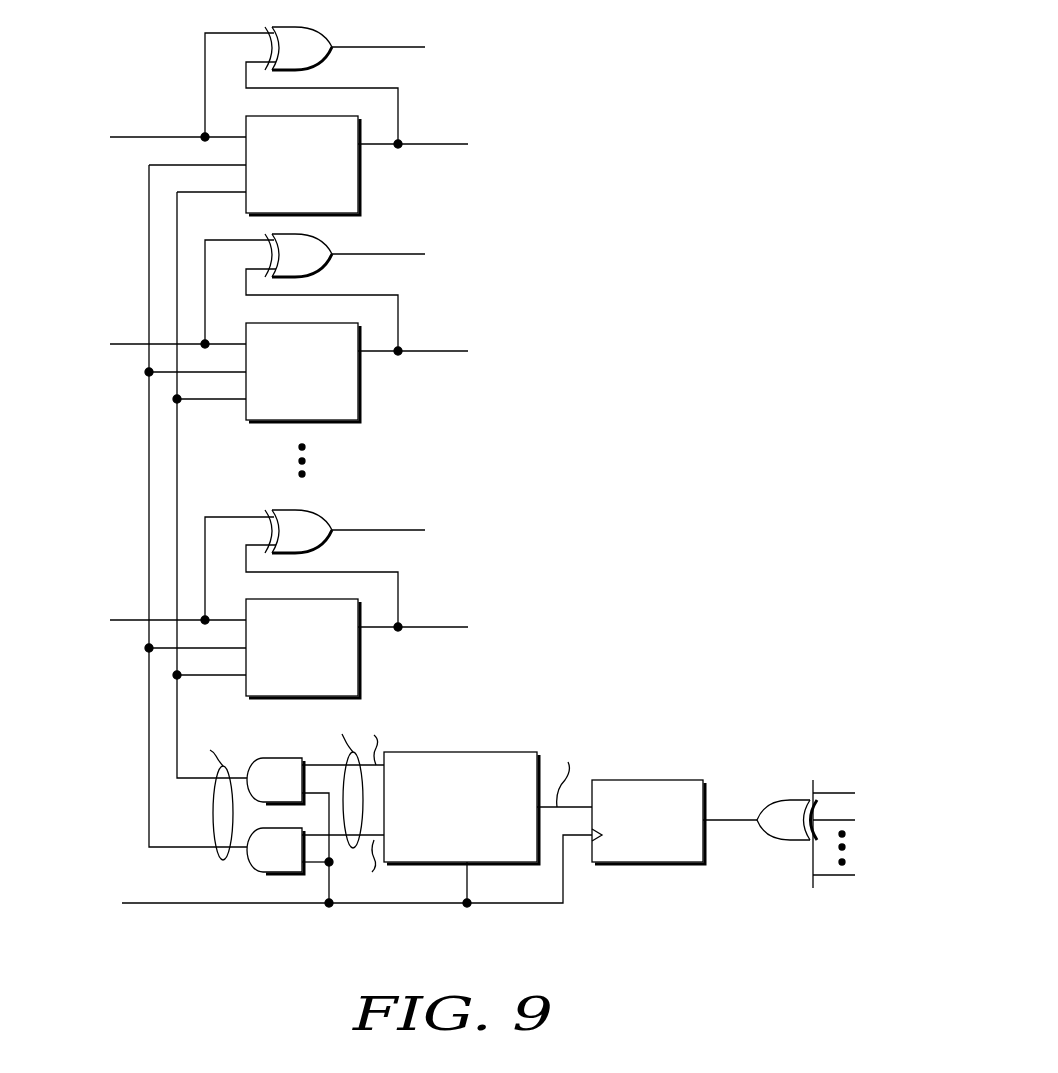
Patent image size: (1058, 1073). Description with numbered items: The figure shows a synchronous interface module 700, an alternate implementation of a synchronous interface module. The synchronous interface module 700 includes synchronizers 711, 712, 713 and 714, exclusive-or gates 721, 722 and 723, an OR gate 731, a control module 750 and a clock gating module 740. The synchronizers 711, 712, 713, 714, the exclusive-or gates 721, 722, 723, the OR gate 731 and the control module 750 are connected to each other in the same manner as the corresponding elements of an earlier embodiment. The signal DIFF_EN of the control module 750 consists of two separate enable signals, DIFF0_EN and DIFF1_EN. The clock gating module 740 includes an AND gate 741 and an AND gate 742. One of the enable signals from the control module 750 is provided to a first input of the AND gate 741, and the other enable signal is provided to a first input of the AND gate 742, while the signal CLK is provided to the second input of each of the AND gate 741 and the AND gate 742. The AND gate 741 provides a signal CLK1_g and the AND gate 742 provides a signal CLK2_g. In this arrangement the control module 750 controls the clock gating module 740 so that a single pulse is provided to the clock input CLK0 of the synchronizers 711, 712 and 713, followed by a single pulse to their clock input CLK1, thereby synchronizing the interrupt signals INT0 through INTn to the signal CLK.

The synchronous interface module 700 is at (475, 500).
The synchronizer 711 is at (345, 190).
The synchronizer 712 is at (345, 397).
The synchronizer 713 is at (345, 673).
The synchronizer 714 is at (653, 780).
The exclusive-or gate 721 is at (336, 53).
The exclusive-or gate 722 is at (336, 260).
The exclusive-or gate 723 is at (318, 511).
The OR gate 731 is at (797, 800).
The clock gating module 740 is at (253, 854).
The AND gate 741 is at (293, 786).
The AND gate 742 is at (275, 851).
The control module 750 is at (473, 752).